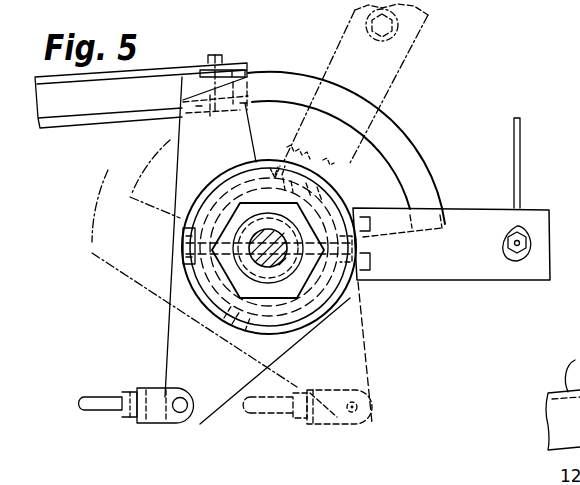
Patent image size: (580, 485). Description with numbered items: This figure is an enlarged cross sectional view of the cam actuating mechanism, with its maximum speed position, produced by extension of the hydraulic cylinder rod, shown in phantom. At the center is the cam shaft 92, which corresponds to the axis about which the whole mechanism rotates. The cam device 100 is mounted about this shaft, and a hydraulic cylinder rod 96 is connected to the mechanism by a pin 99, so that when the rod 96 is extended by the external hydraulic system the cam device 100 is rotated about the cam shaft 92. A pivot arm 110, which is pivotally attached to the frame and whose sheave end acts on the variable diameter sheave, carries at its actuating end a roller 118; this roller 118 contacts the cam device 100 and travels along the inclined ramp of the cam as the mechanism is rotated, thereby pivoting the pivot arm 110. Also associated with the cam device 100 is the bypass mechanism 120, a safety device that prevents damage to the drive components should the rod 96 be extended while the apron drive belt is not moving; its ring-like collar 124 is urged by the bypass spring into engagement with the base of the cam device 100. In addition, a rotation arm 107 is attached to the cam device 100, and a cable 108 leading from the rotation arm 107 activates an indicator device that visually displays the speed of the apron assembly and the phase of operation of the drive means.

The cam shaft 92 is at (285, 262).
The hydraulic cylinder rod 96 is at (110, 412).
The pin 99 is at (180, 413).
The cam device 100 is at (418, 100).
The rotation arm 107 is at (476, 255).
The cable 108 is at (520, 160).
The pivot arm 110 is at (162, 66).
The roller 118 is at (182, 83).
The bypass mechanism 120 is at (137, 310).
The collar 124 is at (166, 351).